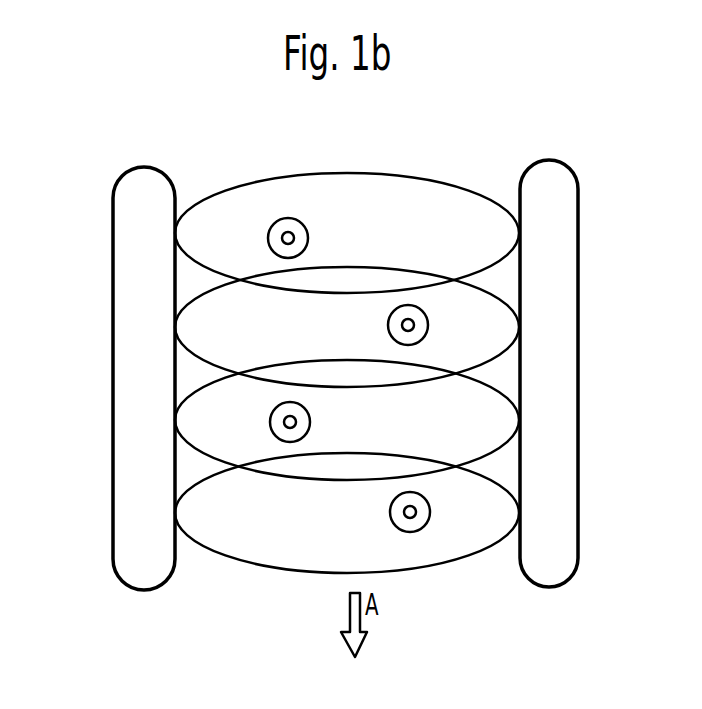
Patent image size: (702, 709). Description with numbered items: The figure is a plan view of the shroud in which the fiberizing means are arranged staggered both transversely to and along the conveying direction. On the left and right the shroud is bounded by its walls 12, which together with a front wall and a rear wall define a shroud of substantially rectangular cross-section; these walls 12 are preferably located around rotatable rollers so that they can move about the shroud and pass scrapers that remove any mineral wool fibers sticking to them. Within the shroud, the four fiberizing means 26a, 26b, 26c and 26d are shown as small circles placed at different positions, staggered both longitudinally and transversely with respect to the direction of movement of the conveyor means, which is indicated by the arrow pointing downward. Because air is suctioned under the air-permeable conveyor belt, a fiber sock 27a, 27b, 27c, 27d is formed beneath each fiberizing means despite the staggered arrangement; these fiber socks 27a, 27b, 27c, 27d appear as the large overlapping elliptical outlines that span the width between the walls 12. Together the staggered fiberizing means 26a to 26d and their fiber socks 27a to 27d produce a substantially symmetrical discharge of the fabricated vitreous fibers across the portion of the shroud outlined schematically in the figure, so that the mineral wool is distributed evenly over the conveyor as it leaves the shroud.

The walls 12 is at (174, 277).
The fiberizing means 26a is at (288, 218).
The fiberizing means 26b is at (428, 322).
The fiberizing means 26c is at (270, 412).
The fiberizing means 26d is at (420, 525).
The fiber sock 27a is at (405, 198).
The fiber sock 27b is at (488, 348).
The fiber sock 27c is at (213, 442).
The fiber sock 27d is at (308, 540).